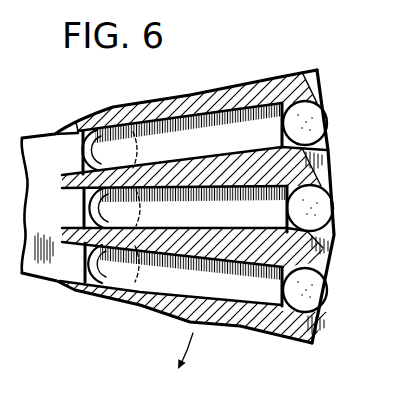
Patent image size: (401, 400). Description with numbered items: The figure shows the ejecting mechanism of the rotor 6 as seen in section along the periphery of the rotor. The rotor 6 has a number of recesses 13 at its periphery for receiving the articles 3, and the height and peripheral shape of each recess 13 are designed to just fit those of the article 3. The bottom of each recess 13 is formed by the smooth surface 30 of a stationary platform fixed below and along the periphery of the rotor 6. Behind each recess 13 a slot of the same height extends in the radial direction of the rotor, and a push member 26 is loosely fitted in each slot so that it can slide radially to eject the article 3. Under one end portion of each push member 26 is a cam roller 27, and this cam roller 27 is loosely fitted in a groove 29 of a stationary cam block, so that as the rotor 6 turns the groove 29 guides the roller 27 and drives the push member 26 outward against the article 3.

The article 3 is at (323, 122).
The recess 13 is at (311, 272).
The push member 26 is at (219, 215).
The cam roller 27 is at (82, 155).
The groove 29 is at (84, 198).
The smooth surface 30 is at (335, 249).
The rotor 6 is at (147, 303).